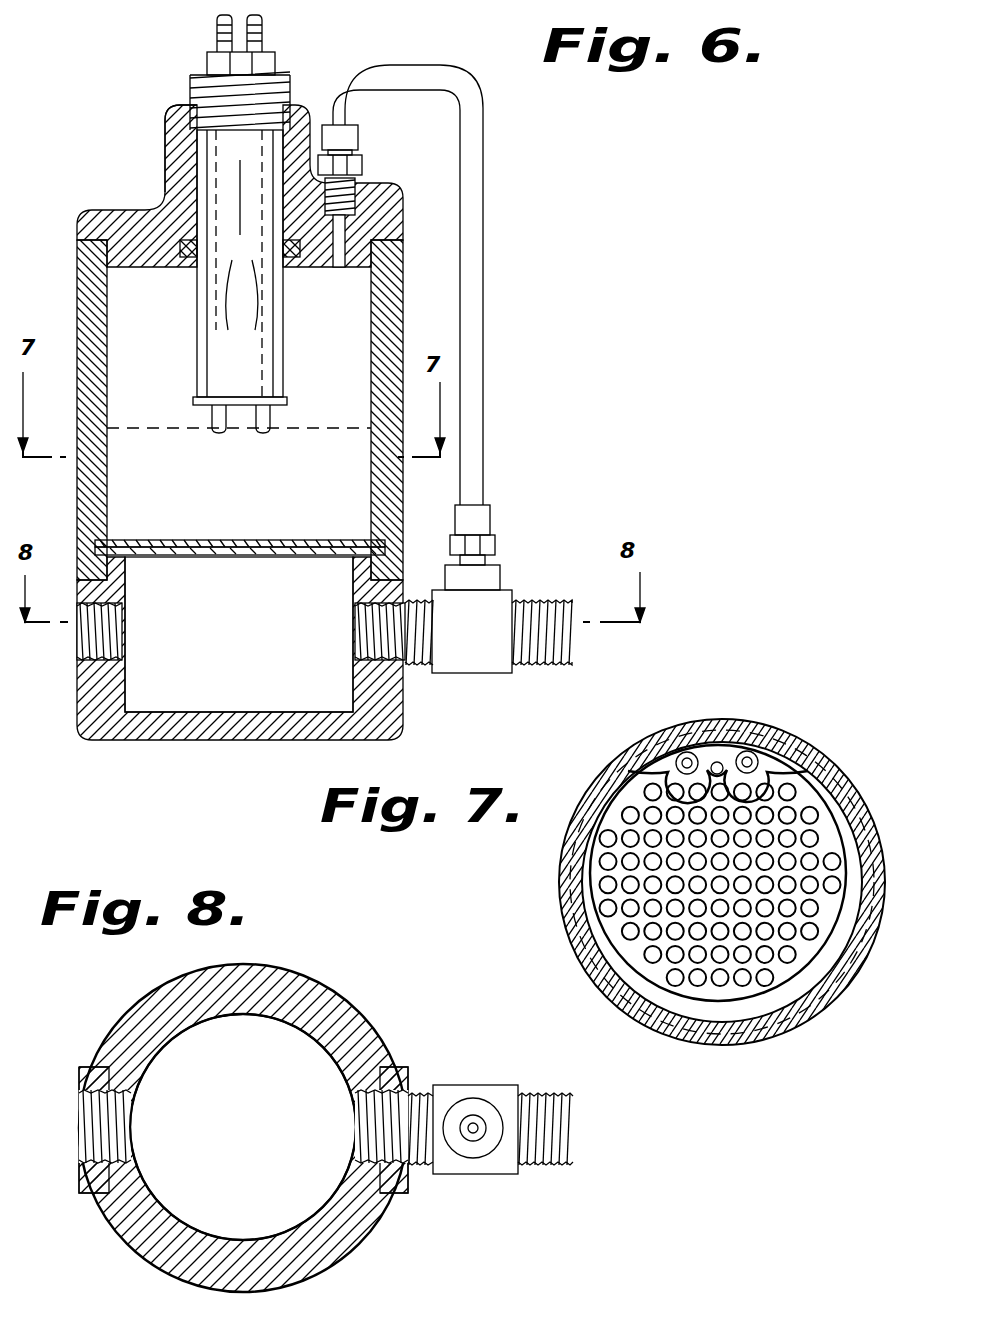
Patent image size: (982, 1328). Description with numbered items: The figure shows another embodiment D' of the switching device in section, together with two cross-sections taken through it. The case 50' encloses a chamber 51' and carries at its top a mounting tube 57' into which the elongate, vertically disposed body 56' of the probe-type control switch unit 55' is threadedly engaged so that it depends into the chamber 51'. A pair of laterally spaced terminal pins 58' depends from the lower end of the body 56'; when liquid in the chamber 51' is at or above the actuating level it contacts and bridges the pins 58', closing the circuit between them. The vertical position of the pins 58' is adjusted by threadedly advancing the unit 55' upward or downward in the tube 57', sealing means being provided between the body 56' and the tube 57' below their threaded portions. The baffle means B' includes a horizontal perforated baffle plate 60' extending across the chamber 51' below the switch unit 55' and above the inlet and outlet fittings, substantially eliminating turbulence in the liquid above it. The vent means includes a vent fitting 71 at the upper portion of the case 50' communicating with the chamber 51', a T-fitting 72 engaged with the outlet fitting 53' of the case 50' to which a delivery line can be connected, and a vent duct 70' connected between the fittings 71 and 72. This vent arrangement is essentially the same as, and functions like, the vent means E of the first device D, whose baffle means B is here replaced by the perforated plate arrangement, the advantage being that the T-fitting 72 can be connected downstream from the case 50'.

In FIG. 6, the case 50' is at (241, 444).
In FIG. 7, the case 50' is at (722, 861).
In FIG. 8, the case 50' is at (249, 1127).
In FIG. 6, the chamber 51' is at (239, 634).
In FIG. 7, the chamber 51' is at (709, 744).
In FIG. 8, the chamber 51' is at (281, 1119).
In FIG. 8, the outlet fitting 53' is at (423, 1107).
In FIG. 6, the control switch unit 55' is at (268, 267).
In FIG. 6, the body 56' is at (208, 263).
In FIG. 6, the mounting tube 57' is at (131, 148).
In FIG. 6, the terminal pins 58' is at (218, 436).
In FIG. 6, the perforated baffle plate 60' is at (240, 575).
In FIG. 7, the perforated baffle plate 60' is at (673, 885).
In FIG. 6, the vent duct 70' is at (453, 285).
In FIG. 8, the vent duct 70' is at (450, 1184).
In FIG. 6, the vent fitting 71 is at (358, 165).
In FIG. 6, the T-fitting 72 is at (495, 600).
In FIG. 8, the T-fitting 72 is at (485, 1170).
In FIG. 6, the device D is at (189, 73).
In FIG. 7, the device D is at (678, 882).
In FIG. 8, the device D is at (217, 1060).
In FIG. 7, the second embodiment of the invention D' is at (678, 882).
In FIG. 8, the second embodiment of the invention D' is at (217, 1060).
In FIG. 6, the screen baffle B is at (240, 522).
In FIG. 7, the screen baffle B is at (670, 873).
In FIG. 7, the baffle means B' is at (670, 873).
In FIG. 6, the vent means E is at (495, 318).
In FIG. 8, the vent means E is at (510, 1078).